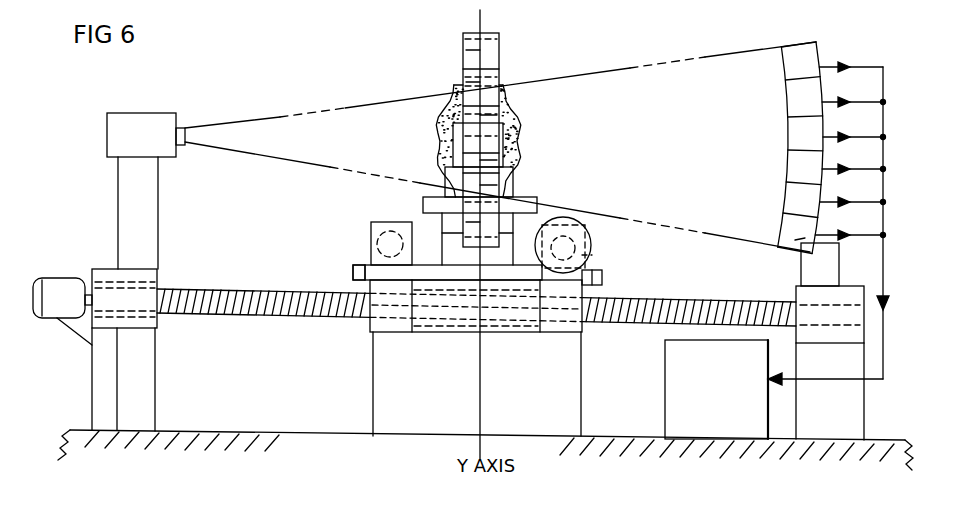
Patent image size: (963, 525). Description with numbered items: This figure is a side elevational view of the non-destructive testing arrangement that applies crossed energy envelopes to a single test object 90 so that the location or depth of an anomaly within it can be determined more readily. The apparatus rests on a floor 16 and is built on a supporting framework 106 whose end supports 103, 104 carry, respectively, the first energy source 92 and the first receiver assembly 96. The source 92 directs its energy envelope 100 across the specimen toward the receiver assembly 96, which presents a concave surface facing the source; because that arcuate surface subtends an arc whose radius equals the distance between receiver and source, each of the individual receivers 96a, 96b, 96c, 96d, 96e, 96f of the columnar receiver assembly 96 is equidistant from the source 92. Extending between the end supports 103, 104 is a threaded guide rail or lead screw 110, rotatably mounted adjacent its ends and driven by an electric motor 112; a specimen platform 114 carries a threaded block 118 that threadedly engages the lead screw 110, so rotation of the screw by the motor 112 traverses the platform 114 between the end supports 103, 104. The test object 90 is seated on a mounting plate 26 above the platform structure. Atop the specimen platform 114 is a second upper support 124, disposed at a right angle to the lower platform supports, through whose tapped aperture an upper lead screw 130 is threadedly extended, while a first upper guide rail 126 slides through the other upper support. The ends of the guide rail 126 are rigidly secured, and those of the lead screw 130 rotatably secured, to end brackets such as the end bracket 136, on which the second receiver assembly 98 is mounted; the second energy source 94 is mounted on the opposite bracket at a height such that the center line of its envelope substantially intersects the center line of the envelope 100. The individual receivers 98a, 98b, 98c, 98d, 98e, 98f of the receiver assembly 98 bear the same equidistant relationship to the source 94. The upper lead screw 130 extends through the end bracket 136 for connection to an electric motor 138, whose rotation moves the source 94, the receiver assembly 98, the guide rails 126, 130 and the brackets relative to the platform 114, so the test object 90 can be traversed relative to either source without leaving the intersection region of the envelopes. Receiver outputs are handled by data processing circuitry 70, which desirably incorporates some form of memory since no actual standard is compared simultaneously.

The floor 16 is at (195, 432).
The workpiece support plate 26 is at (530, 208).
The data processing circuitry 70 is at (668, 396).
The test object 90 is at (510, 133).
The energy source 92 is at (133, 120).
The energy source 94 is at (497, 180).
The receiver assembly 96 is at (793, 71).
The individual receiver 96a is at (806, 58).
The individual receiver 96b is at (811, 95).
The individual receiver 96c is at (812, 130).
The individual receiver 96d is at (815, 163).
The individual receiver 96e is at (812, 196).
The individual receiver 96f is at (808, 231).
The receiver assembly 98 is at (503, 57).
The individual receiver 98a is at (470, 48).
The individual receiver 98b is at (471, 87).
The individual receiver 98c is at (490, 115).
The individual receiver 98d is at (490, 160).
The individual receiver 98e is at (490, 185).
The individual receiver 98f is at (465, 222).
The energy envelope 100 is at (285, 114).
The end support 103 is at (158, 275).
The end support 104 is at (796, 290).
The supporting framework 106 is at (847, 286).
The lead screw 110 is at (238, 300).
The electric motor 112 is at (56, 282).
The specimen platform 114 is at (353, 272).
The threaded block 118 is at (493, 330).
The second upper support 124 is at (603, 280).
The first guide rail 126 is at (390, 230).
The lead screw 130 is at (592, 255).
The end bracket 136 is at (364, 268).
The electric motor 138 is at (582, 225).